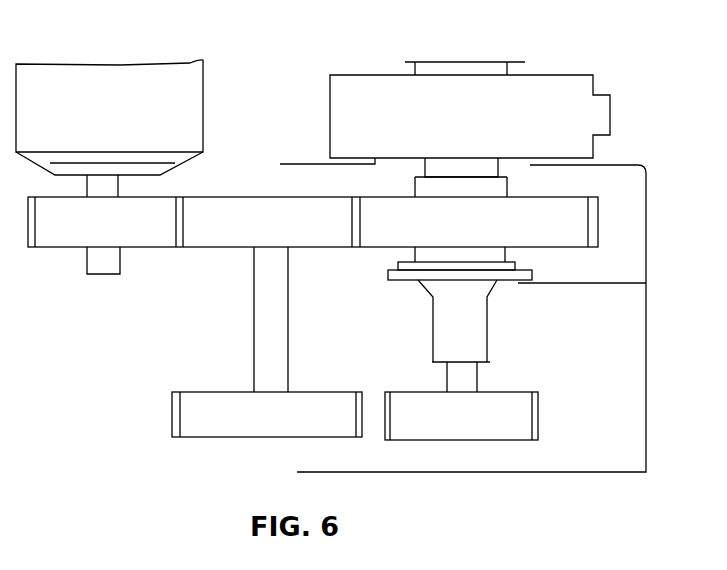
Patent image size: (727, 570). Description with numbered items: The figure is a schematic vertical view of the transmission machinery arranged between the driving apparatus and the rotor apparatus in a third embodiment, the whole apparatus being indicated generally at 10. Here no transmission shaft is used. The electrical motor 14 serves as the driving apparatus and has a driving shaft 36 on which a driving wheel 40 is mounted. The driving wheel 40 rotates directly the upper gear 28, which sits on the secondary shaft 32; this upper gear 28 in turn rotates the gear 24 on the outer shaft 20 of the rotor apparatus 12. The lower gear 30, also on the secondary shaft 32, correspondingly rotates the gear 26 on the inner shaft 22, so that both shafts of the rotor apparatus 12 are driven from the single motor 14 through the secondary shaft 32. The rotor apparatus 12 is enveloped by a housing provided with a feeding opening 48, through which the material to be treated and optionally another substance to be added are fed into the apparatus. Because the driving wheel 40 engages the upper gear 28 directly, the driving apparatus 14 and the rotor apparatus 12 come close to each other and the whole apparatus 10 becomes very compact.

The machine tool assembly 10 is at (197, 292).
The rotor apparatus 12 is at (370, 88).
The electrical motor 14 is at (78, 86).
The outer shaft 20 is at (415, 262).
The inner shaft 22 is at (472, 376).
The gear on the outer shaft 24 is at (474, 222).
The gear on the inner shaft 26 is at (461, 416).
The upper gear 28 is at (267, 222).
The lower gear 30 is at (267, 414).
The secondary shaft 32 is at (272, 326).
The driving shaft 36 is at (92, 270).
The driving wheel 40 is at (313, 222).
The feeding opening 48 is at (452, 62).